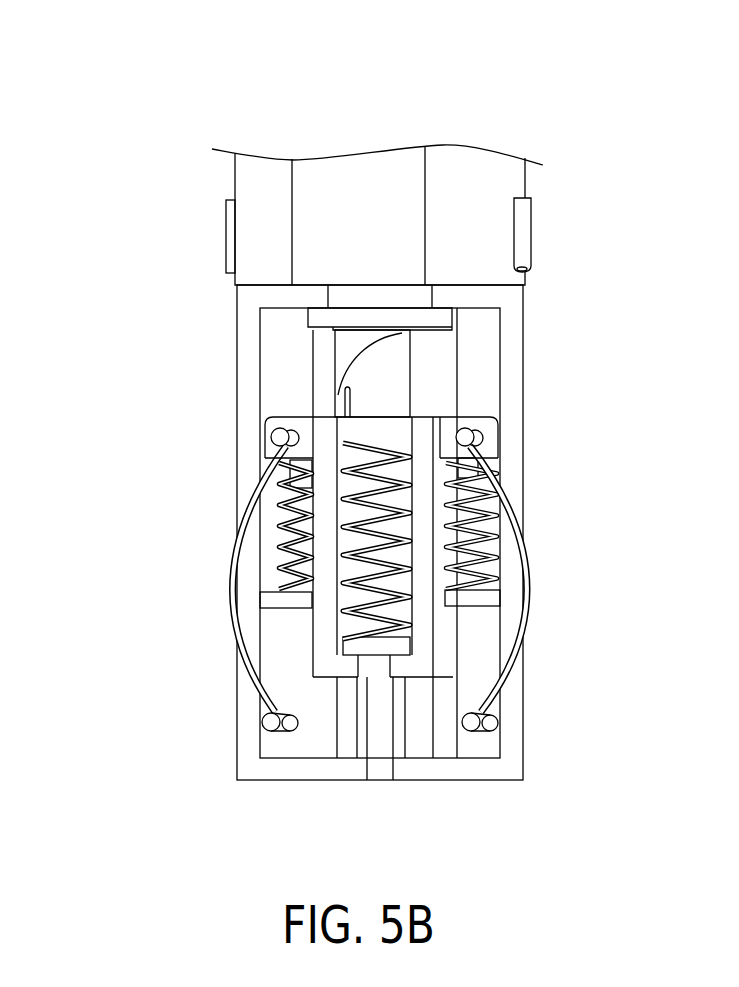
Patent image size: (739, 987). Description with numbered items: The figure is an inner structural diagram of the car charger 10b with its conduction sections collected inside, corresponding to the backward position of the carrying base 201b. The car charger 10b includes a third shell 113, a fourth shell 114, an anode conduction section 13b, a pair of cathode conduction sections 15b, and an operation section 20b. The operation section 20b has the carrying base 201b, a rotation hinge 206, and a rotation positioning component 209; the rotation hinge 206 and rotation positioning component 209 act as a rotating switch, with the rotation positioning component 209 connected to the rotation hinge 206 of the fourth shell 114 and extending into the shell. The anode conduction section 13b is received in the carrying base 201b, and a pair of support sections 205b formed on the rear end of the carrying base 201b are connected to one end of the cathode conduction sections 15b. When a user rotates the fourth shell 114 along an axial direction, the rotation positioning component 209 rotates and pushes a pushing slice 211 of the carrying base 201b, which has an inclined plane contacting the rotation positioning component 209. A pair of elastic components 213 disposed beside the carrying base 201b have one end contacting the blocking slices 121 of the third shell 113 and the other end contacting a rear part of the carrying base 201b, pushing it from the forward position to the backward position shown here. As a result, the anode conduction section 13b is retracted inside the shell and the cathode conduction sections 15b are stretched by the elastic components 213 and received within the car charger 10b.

The car charger 10b is at (95, 42).
The fourth shell 114 is at (497, 240).
The rotation hinge 206 is at (415, 298).
The third shell 113 is at (510, 432).
The operation section 20b is at (130, 313).
The rotation positioning component 209 is at (315, 320).
The pushing slice 211 is at (402, 372).
The carrying base 201b is at (342, 540).
The elastic component 213 is at (278, 495).
The blocking slice 121 is at (287, 598).
The cathode conduction section 15b is at (237, 613).
The support section 205b is at (271, 437).
The anode conduction section 13b is at (381, 765).